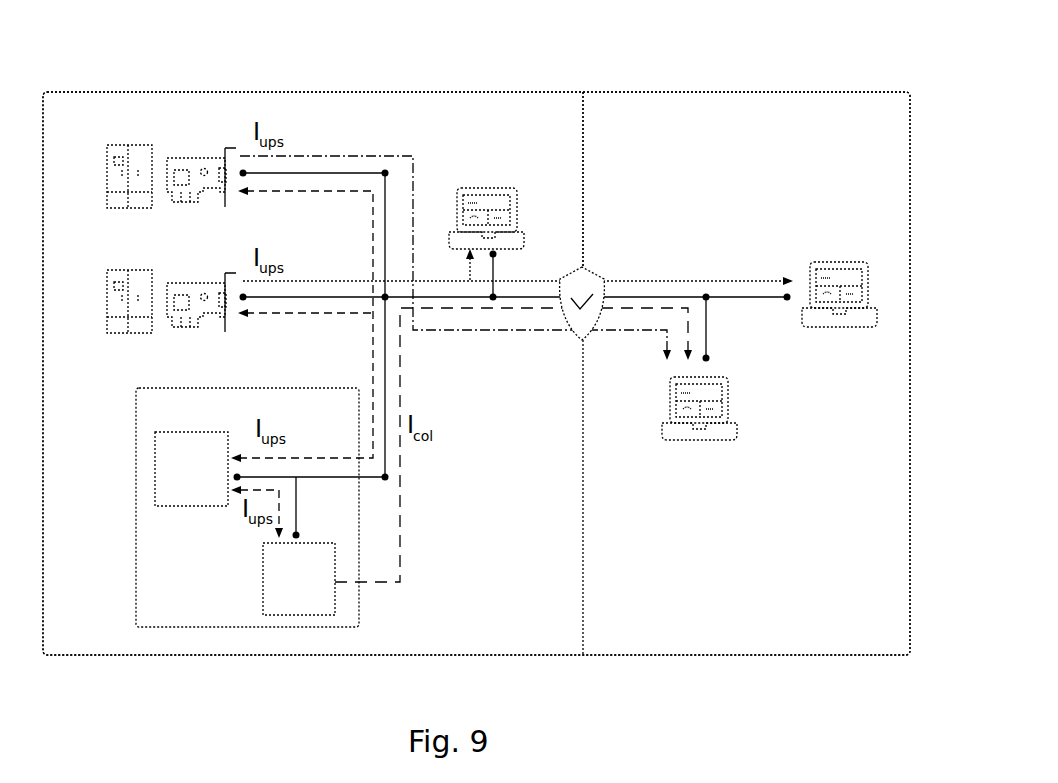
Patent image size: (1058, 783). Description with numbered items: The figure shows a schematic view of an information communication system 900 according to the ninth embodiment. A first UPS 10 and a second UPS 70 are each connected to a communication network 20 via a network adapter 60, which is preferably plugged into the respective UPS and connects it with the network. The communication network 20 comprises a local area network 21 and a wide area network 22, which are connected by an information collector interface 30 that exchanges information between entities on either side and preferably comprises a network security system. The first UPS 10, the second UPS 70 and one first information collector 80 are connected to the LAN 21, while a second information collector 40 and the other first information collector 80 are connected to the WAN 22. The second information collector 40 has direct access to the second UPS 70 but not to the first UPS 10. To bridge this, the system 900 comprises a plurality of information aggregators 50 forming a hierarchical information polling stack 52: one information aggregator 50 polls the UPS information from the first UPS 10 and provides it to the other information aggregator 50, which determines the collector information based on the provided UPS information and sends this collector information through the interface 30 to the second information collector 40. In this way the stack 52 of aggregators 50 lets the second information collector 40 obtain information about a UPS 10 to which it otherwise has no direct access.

The information communication system 900 is at (712, 84).
The communication network 20 is at (347, 173).
The local area network 21 is at (563, 373).
The wide area network 22 is at (739, 179).
The second UPS 70 is at (106, 176).
The first UPS 10 is at (106, 301).
The network adapter 60 is at (201, 229).
The first information collector 80 is at (663, 243).
The information collector interface 30 is at (591, 289).
The second information collector 40 is at (699, 430).
The information aggregator 50 is at (245, 508).
The hierarchical information polling stack 52 is at (136, 548).